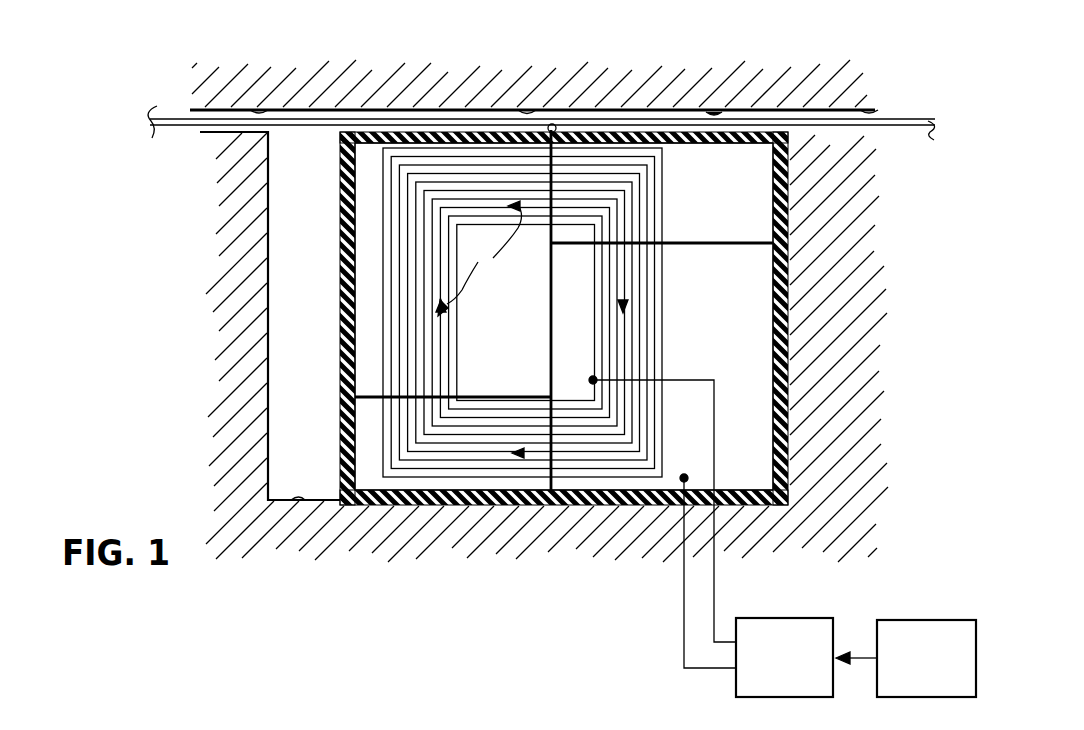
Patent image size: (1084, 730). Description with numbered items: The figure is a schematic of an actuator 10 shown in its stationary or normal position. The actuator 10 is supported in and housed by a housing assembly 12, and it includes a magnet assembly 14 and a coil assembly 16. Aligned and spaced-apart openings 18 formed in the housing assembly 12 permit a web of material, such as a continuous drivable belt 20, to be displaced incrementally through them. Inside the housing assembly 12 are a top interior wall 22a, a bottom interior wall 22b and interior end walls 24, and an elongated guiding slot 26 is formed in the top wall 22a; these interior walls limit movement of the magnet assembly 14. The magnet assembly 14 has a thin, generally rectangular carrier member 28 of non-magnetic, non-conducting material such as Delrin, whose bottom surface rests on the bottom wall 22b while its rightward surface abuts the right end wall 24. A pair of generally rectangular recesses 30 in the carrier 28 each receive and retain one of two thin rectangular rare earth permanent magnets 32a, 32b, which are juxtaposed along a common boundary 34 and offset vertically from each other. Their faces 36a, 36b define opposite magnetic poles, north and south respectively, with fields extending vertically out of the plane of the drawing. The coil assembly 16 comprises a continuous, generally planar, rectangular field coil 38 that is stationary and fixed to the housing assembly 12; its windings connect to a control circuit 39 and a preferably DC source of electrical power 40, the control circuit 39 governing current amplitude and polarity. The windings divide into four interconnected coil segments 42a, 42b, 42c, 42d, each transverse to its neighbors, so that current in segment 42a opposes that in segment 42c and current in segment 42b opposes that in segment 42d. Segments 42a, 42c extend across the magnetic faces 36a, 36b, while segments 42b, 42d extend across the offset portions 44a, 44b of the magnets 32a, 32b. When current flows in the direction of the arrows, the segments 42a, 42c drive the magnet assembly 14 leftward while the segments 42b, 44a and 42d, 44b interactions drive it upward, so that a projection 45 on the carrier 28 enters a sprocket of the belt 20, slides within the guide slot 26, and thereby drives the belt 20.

The actuator 10 is at (180, 106).
The housing assembly 12 is at (836, 467).
The magnet assembly 14 is at (780, 153).
The coil assembly 16 is at (413, 477).
The openings 18 is at (259, 109).
The continuous drivable belt 20 is at (760, 109).
The top interior wall 22a is at (712, 112).
The bottom interior wall 22b is at (302, 500).
The interior end walls 24 is at (268, 300).
The elongated guiding slot 26 is at (527, 109).
The carrier member 28 is at (788, 492).
The recesses 30 is at (710, 243).
The permanent magnet 32a is at (347, 276).
The permanent magnet 32b is at (788, 412).
The common boundary 34 is at (551, 286).
The magnet face 36a is at (508, 334).
The magnet face 36b is at (705, 358).
The field coil 38 is at (374, 164).
The control circuit 39 is at (782, 618).
The source of electrical power 40 is at (924, 620).
The coil segment 42a is at (405, 250).
The coil segment 42b is at (500, 178).
The coil segment 42c is at (633, 232).
The coil segment 42d is at (497, 470).
The offset magnet portion 44a is at (553, 173).
The offset magnet portion 44b is at (549, 482).
The projection 45 is at (556, 124).